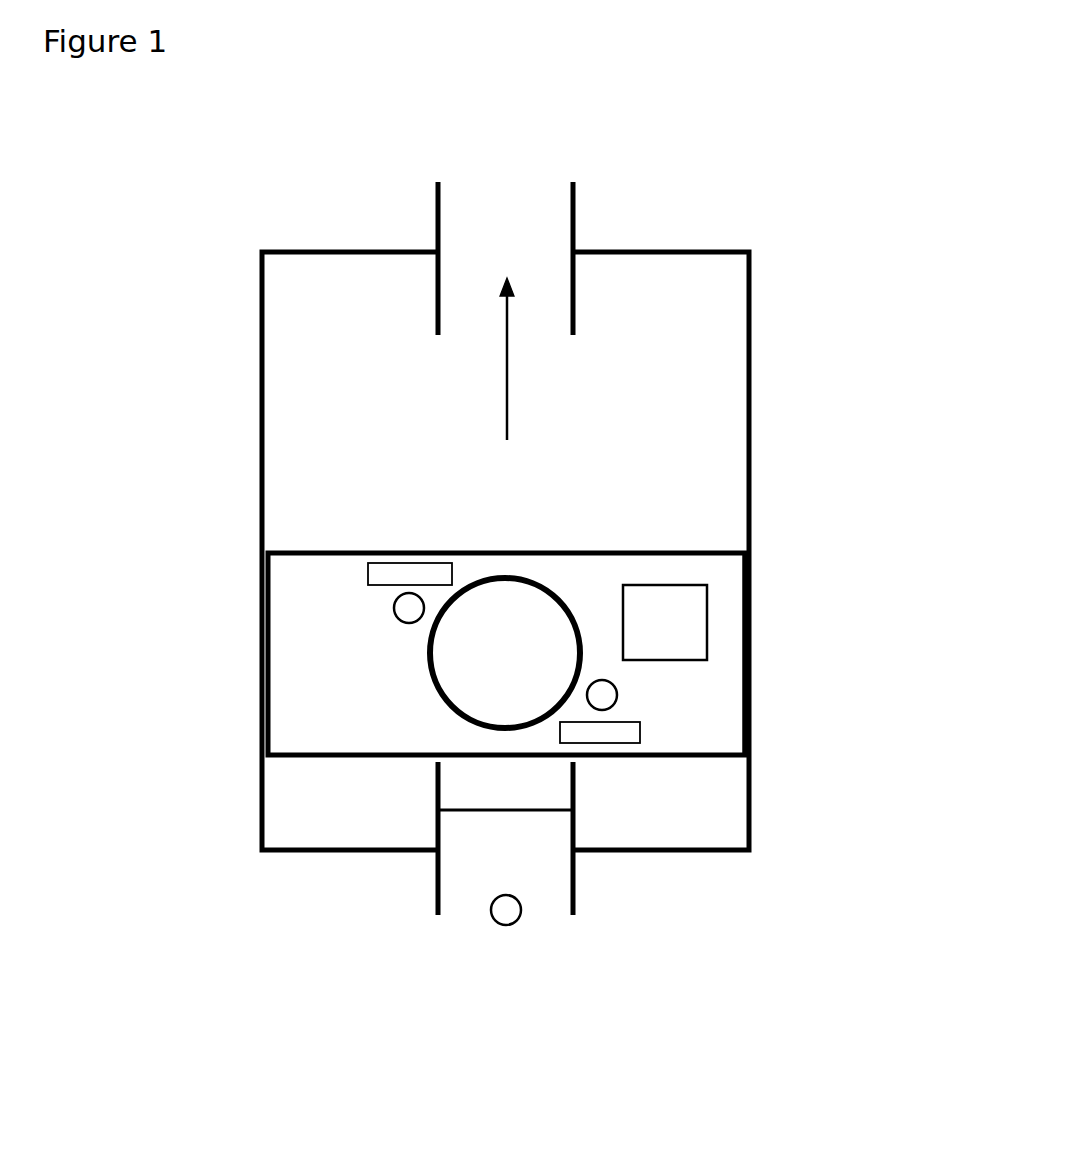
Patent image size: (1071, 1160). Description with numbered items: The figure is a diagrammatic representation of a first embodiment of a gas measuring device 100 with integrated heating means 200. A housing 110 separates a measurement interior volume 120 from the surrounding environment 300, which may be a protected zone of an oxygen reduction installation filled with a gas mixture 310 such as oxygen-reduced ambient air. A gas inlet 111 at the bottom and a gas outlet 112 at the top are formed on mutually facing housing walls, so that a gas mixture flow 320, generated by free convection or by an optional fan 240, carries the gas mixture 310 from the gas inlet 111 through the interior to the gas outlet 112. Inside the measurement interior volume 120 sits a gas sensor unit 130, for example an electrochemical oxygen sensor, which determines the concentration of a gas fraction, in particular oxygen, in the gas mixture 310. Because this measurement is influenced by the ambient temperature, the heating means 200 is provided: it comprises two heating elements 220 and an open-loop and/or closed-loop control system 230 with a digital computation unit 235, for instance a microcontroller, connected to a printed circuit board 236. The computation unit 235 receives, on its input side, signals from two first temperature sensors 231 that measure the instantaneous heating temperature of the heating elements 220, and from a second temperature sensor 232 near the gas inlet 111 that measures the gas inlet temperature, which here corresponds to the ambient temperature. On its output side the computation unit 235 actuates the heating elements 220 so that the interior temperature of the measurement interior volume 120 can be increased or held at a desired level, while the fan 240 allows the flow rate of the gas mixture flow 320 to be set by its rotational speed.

The gas measuring device 100 is at (752, 475).
The housing 110 is at (752, 350).
The gas inlet 111 is at (436, 900).
The gas outlet 112 is at (575, 212).
The measurement interior volume 120 is at (430, 470).
The gas sensor unit 130 is at (432, 660).
The heating means 200 is at (776, 595).
The heating elements 220 is at (368, 565).
The open-loop and/or closed-loop control system 230 is at (610, 805).
The first temperature sensor 231 is at (397, 615).
The second temperature sensor 232 is at (497, 922).
The digital computation unit 235 is at (665, 622).
The printed circuit board 236 is at (750, 688).
The fan 240 is at (519, 812).
The environment 300 is at (118, 309).
The gas mixture 310 is at (176, 295).
The gas mixture flow 320 is at (535, 359).